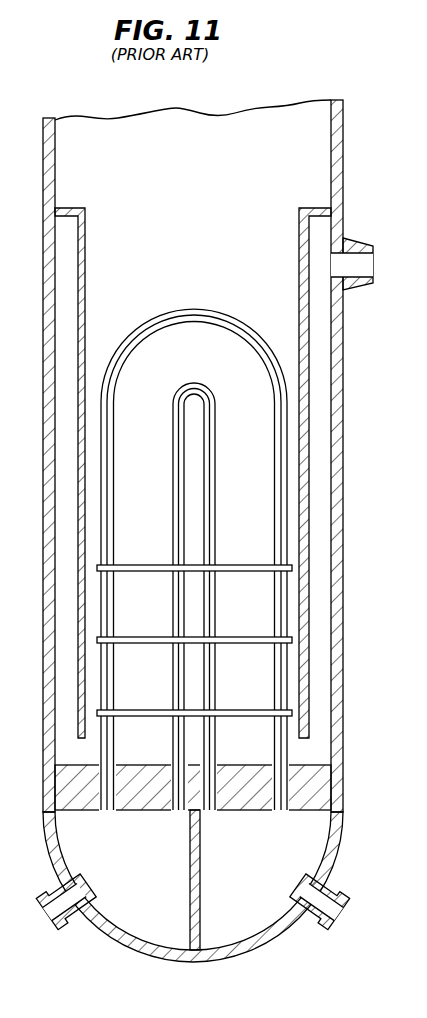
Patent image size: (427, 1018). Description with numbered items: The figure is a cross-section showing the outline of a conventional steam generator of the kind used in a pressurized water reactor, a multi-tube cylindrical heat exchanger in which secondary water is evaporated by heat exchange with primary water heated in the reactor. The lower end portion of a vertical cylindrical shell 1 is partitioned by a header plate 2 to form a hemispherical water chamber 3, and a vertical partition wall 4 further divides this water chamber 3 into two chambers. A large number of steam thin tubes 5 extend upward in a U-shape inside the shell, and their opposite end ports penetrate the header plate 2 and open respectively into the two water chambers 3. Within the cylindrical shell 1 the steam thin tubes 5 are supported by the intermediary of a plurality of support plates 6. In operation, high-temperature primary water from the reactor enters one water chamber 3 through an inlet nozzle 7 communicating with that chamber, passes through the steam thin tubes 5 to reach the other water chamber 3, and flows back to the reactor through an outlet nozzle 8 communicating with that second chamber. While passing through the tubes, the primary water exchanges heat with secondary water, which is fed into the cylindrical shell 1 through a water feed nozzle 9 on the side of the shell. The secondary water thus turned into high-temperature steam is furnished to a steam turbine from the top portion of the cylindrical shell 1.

The cylindrical shell 1 is at (341, 536).
The header plate 2 is at (257, 815).
The water chamber 3 is at (166, 932).
The vertical partition wall 4 is at (189, 840).
The steam thin tubes 5 is at (209, 309).
The support plates 6 is at (244, 565).
The inlet nozzle 7 is at (330, 918).
The outlet nozzle 8 is at (57, 914).
The water feed nozzle 9 is at (370, 262).